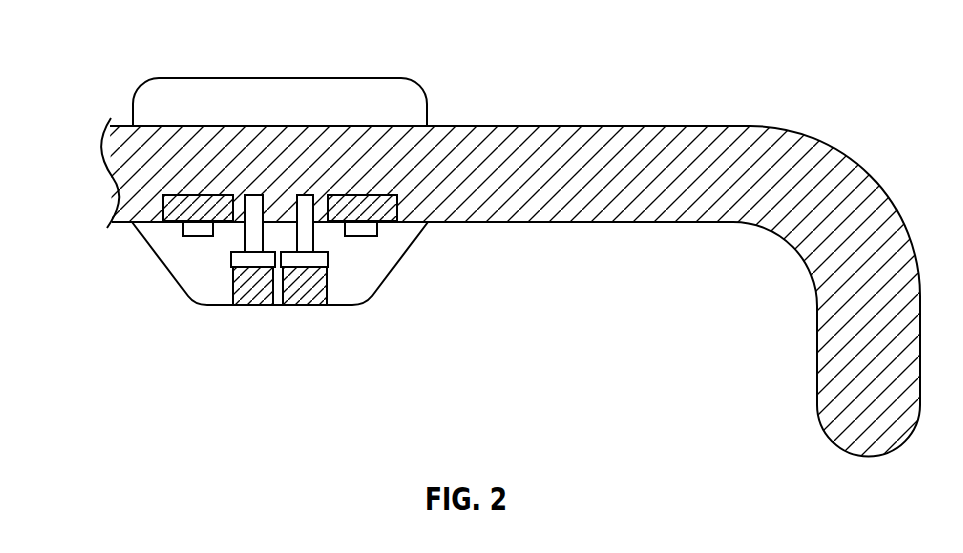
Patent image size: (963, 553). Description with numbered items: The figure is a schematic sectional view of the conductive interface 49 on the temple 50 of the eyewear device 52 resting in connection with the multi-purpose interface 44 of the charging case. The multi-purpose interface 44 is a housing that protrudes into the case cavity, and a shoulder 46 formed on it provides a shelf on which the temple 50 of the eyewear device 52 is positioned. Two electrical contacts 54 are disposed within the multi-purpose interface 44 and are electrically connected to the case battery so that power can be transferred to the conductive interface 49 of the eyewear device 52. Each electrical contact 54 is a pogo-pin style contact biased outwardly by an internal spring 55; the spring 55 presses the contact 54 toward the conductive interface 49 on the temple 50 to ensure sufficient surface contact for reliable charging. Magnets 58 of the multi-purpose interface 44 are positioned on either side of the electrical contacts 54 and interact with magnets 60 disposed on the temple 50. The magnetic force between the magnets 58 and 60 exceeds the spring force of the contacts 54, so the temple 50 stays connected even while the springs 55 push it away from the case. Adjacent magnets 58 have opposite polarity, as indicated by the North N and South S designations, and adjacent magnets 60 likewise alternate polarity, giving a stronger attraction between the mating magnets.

The multi-purpose interface 44 is at (243, 78).
The shoulder 46 is at (465, 267).
The conductive interface 49 is at (303, 193).
The temple 50 is at (465, 287).
The eyewear device 52 is at (121, 159).
The electrical contact 54 is at (198, 238).
The internal spring 55 is at (248, 268).
The magnets 58 is at (230, 282).
The magnets 60 is at (187, 193).
The North polarity designation N is at (231, 152).
The South polarity designation S is at (321, 193).